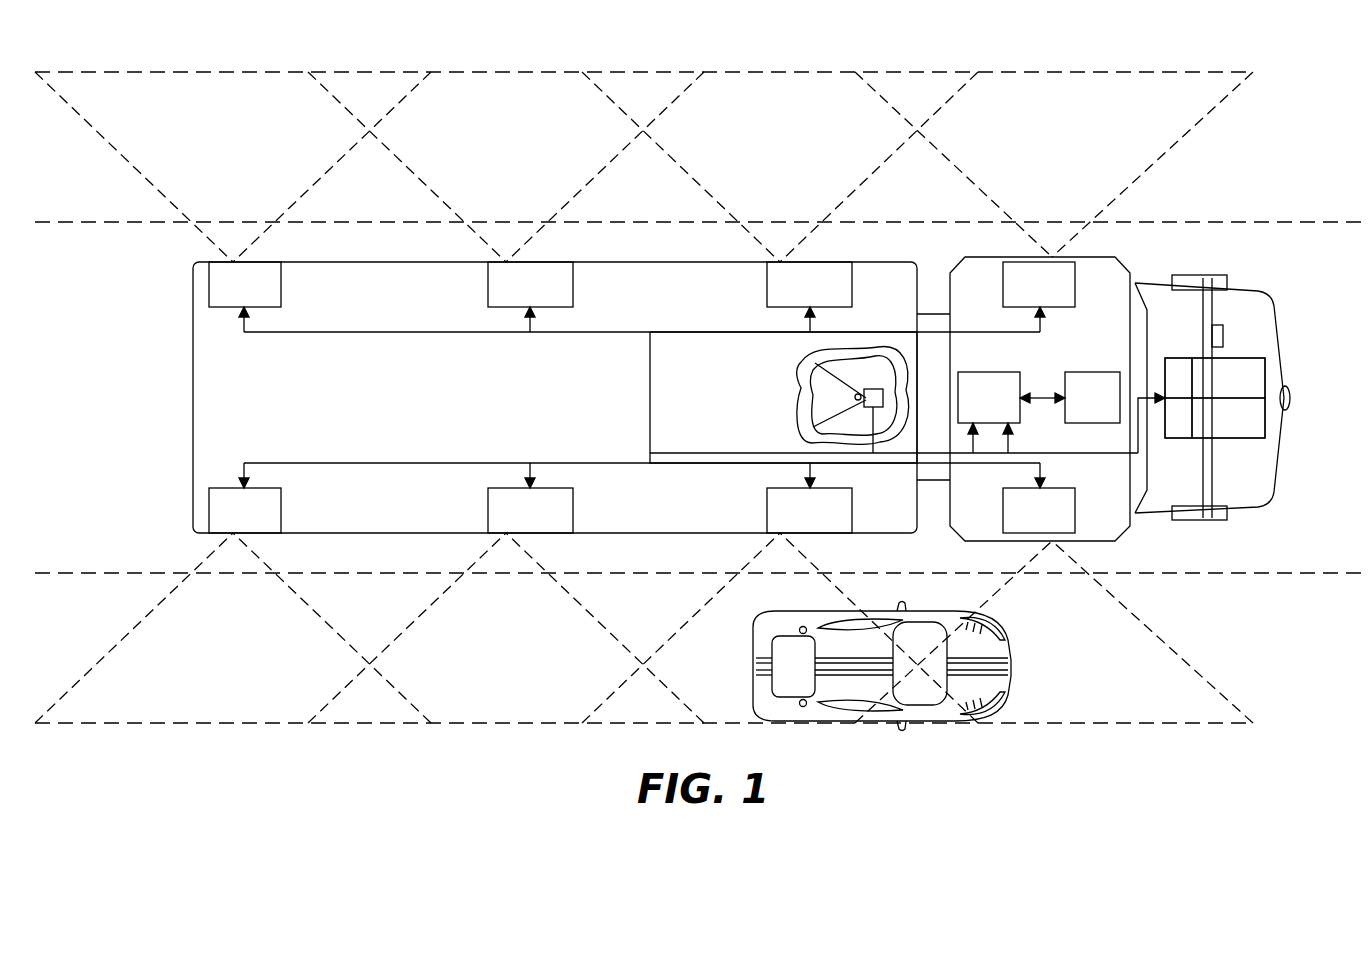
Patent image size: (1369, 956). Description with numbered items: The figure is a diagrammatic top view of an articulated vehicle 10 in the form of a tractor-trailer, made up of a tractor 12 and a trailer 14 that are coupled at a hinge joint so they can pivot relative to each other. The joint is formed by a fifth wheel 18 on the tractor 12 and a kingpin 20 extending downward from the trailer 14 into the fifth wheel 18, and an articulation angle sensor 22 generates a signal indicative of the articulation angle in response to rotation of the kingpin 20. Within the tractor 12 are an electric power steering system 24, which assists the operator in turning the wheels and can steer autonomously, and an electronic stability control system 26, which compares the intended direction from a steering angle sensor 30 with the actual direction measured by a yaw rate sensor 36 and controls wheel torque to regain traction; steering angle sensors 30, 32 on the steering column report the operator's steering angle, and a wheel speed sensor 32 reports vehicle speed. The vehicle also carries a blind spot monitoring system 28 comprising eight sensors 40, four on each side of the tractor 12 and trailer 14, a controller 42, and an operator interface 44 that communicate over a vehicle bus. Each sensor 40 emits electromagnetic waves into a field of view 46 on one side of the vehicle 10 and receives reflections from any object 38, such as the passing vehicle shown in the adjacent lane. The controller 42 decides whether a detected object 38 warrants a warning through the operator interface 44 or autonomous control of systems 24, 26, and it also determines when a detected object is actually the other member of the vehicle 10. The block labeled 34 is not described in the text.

The articulated vehicle 10 is at (150, 348).
The tractor 12 is at (1266, 312).
The trailer 14 is at (207, 411).
The fifth wheel 18 is at (868, 375).
The kingpin 20 is at (855, 396).
The articulation angle sensor 22 is at (863, 403).
The electric power steering system 24 is at (1228, 418).
The electronic stability control system 26 is at (1228, 378).
The blind spot monitoring system 28 is at (1043, 360).
The steering angle sensor 30 is at (1180, 430).
The steering angle sensor 32 is at (1182, 406).
The steering sensor 34 is at (1223, 336).
The yaw rate sensor 36 is at (1178, 366).
The object 38 is at (955, 699).
The sensors 40 is at (642, 397).
The controller 42 is at (1027, 412).
The operator interface 44 is at (1092, 397).
The field of view 46 is at (1193, 666).